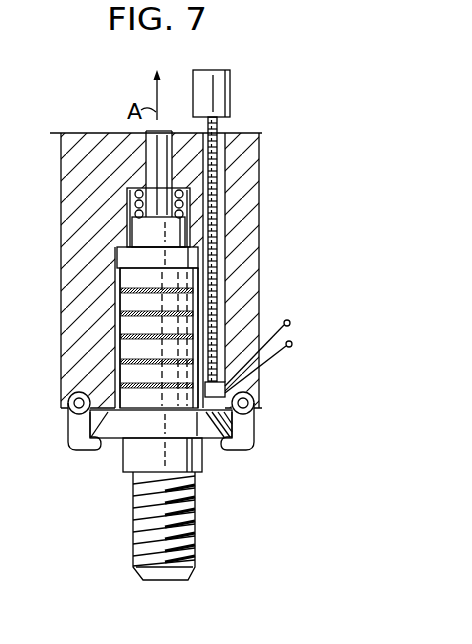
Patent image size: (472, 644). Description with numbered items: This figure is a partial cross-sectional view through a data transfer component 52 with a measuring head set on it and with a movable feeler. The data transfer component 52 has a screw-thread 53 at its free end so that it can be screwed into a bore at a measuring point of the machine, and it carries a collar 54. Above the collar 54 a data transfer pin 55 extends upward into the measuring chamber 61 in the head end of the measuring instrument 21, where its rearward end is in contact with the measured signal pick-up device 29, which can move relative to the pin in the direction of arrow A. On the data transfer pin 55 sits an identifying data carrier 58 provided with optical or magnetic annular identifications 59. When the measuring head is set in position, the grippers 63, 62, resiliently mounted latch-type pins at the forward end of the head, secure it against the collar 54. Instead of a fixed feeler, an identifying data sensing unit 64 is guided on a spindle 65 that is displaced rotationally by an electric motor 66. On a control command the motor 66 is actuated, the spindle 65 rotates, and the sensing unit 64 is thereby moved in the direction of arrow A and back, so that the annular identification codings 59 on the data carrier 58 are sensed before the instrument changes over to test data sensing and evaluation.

The measuring instrument 21 is at (328, 127).
The electric motor 66 is at (228, 96).
The spindle 65 is at (216, 158).
The measured signal pick-up device 29 is at (173, 228).
The data transfer pin 55 is at (175, 257).
The identifying data carrier 58 is at (183, 278).
The annular identifications 59 is at (118, 329).
The measuring chamber 61 is at (118, 281).
The identifying data sensing unit 64 is at (233, 389).
The gripper 63 is at (70, 443).
The gripper 62 is at (307, 429).
The collar 54 is at (252, 452).
The data transfer component 52 is at (260, 494).
The screw-thread 53 is at (147, 528).